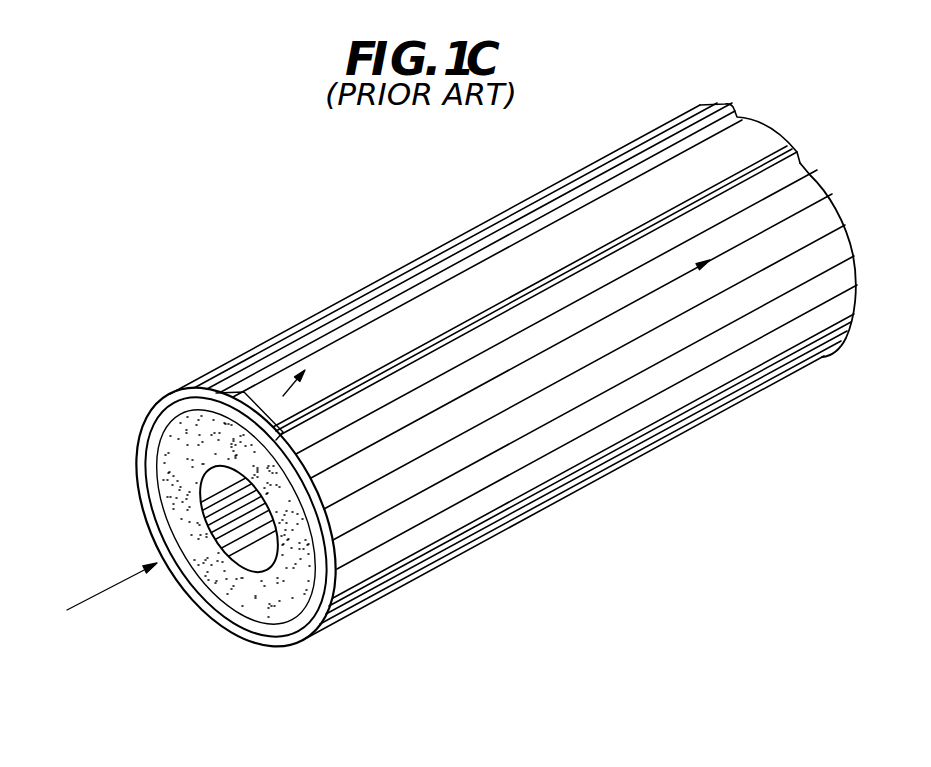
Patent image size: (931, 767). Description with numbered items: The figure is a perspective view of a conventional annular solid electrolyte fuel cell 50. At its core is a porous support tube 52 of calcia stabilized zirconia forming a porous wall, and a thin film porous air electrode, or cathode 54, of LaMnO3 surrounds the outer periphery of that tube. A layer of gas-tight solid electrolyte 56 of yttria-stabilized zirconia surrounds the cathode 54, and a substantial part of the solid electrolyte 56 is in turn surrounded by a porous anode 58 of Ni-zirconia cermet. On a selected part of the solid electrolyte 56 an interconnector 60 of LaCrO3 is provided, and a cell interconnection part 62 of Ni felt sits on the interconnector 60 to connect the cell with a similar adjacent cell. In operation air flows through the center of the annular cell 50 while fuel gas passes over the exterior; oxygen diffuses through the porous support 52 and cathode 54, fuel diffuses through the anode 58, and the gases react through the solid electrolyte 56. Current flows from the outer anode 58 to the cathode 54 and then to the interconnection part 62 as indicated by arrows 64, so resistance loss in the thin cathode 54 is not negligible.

The annular fuel cell 50 is at (665, 473).
The porous support tube 52 is at (289, 522).
The cathode 54 is at (162, 514).
The solid electrolyte 56 is at (296, 633).
The anode 58 is at (247, 644).
The interconnector 60 is at (253, 432).
The cell interconnection part 62 is at (757, 127).
The arrows 64 is at (300, 390).